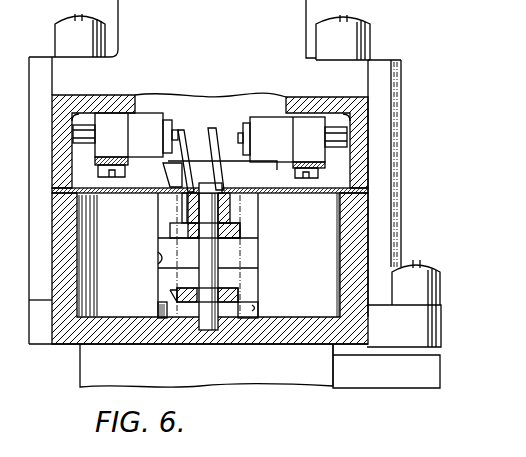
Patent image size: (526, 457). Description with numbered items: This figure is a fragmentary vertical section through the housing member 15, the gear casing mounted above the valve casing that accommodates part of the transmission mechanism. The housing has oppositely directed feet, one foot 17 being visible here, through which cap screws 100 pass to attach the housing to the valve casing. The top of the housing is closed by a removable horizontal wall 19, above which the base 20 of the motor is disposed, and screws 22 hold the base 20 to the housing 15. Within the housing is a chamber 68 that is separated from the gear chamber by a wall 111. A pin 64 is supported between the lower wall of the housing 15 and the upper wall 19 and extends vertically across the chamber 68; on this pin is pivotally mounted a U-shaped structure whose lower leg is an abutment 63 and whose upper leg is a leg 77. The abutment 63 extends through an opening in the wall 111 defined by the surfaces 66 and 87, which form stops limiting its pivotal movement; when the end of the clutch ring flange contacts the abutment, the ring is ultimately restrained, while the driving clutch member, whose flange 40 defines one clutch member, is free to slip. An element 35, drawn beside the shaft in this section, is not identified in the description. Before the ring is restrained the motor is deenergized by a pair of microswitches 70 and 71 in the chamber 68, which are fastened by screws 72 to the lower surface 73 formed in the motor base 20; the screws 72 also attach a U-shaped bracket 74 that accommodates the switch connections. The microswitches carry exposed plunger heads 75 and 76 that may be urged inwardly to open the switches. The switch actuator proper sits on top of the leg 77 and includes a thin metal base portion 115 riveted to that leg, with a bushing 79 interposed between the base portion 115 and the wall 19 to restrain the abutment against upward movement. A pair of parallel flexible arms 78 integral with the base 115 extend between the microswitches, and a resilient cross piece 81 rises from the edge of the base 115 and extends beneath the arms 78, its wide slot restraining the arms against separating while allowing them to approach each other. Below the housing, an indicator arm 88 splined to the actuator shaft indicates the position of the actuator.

The housing member 15 is at (370, 219).
The foot 17 is at (404, 326).
The removable horizontal wall 19 is at (330, 188).
The motor base 20 is at (358, 83).
The screws 22 is at (350, 44).
The piston body 35 is at (250, 259).
The flange 40 is at (250, 275).
The abutment 63 is at (238, 293).
The pin 64 is at (213, 247).
The limiting surface 66 is at (158, 258).
The chamber 68 is at (335, 310).
The microswitch 70 is at (268, 117).
The microswitch 71 is at (142, 116).
The screws 72 is at (100, 172).
The lower surface 73 is at (341, 118).
The U-shaped bracket 74 is at (277, 168).
The plunger head 75 is at (242, 138).
The plunger head 76 is at (180, 130).
The upper leg 77 is at (190, 245).
The flexible arms 78 is at (183, 132).
The bushing 79 is at (231, 207).
The resilient cross piece 81 is at (171, 175).
The limiting surface 87 is at (256, 307).
The indicator arm 88 is at (376, 377).
The cap screws 100 is at (427, 268).
The wall 111 is at (100, 277).
The base portion 115 is at (240, 226).